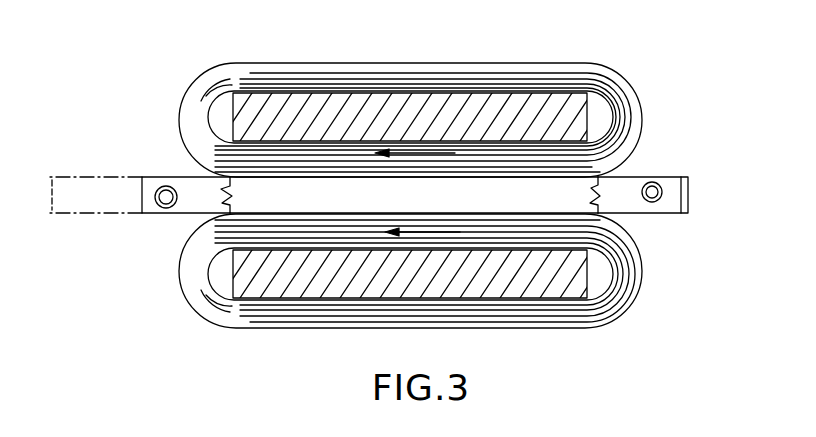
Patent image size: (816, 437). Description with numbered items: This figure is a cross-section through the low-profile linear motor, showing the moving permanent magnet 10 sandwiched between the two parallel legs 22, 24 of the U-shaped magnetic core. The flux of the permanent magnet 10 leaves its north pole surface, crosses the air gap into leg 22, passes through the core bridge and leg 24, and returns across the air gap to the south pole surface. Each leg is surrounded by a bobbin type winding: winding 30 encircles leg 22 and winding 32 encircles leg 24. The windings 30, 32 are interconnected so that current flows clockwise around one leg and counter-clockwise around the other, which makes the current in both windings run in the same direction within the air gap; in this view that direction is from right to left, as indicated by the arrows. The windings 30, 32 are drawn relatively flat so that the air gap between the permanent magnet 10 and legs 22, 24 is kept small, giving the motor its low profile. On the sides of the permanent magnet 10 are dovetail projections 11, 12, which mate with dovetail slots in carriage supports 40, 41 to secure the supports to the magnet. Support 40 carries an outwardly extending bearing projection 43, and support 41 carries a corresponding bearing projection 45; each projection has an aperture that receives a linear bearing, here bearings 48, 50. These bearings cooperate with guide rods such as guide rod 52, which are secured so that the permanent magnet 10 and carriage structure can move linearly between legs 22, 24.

The permanent magnet 10 is at (575, 187).
The dovetail projection 11 is at (600, 203).
The dovetail projection 12 is at (222, 203).
The leg 22 is at (537, 106).
The leg 24 is at (562, 284).
The bobbin type winding 30 is at (418, 73).
The bobbin type winding 32 is at (505, 318).
The carriage support 40 is at (132, 173).
The carriage support 41 is at (690, 158).
The bearing projection 43 is at (183, 183).
The bearing projection 45 is at (675, 200).
The linear bearing 48 is at (162, 205).
The linear bearing 50 is at (165, 192).
The guide rod 52 is at (662, 187).